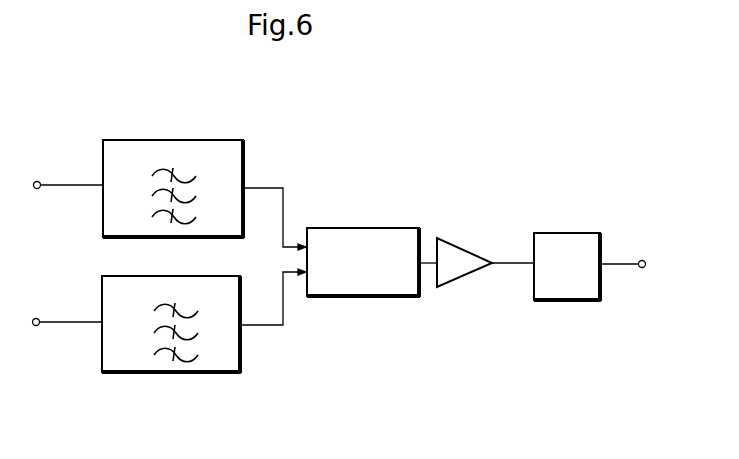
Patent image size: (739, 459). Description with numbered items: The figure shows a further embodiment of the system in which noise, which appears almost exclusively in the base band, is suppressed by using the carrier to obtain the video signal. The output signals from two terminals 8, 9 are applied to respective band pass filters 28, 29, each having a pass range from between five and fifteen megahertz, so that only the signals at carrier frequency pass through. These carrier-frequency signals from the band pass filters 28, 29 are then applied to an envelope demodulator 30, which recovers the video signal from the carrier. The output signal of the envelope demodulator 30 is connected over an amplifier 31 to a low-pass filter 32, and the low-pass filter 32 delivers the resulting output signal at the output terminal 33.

The terminal 8 is at (66, 175).
The terminal 9 is at (65, 311).
The band pass filter 28 is at (247, 109).
The band pass filter 29 is at (263, 368).
The envelope demodulator 30 is at (343, 192).
The amplifier 31 is at (457, 244).
The low-pass filter 32 is at (567, 252).
The terminal 33 is at (625, 277).